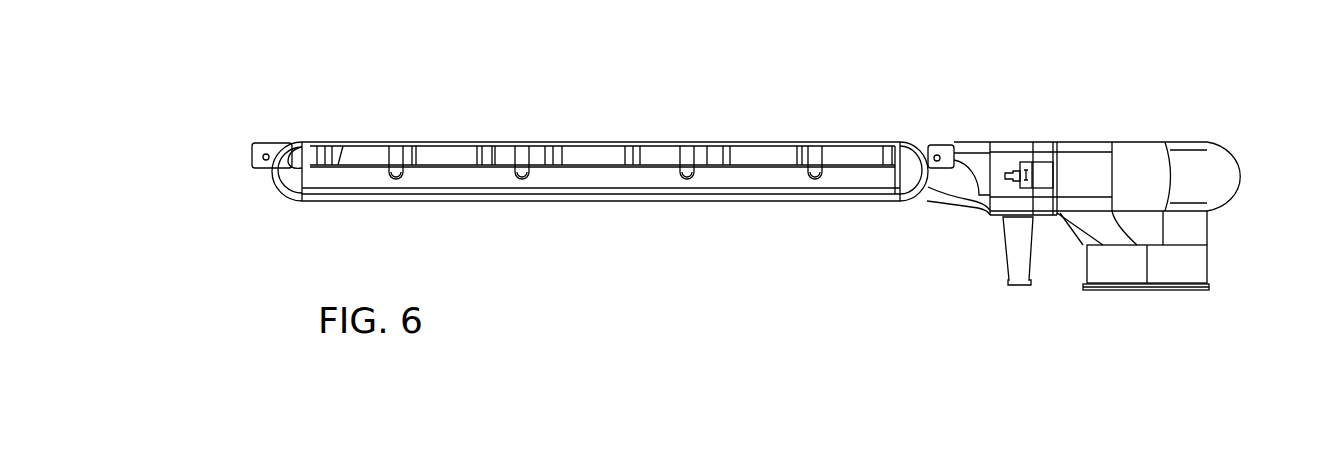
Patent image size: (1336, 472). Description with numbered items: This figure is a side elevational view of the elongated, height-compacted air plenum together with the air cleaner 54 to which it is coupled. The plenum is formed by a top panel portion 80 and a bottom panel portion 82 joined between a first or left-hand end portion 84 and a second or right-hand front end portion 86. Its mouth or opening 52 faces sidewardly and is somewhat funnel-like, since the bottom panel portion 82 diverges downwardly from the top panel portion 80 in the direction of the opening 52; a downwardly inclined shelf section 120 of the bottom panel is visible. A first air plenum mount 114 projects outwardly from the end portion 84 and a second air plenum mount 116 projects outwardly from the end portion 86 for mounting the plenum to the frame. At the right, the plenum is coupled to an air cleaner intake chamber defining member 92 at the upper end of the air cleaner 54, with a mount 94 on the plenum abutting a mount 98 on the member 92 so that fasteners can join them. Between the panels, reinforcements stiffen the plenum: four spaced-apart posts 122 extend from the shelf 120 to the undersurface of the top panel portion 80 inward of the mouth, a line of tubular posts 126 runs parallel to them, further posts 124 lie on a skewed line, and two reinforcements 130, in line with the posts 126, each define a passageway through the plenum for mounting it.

The opening 52 is at (655, 152).
The air cleaner 54 is at (1198, 267).
The top panel portion 80 is at (668, 142).
The bottom panel portion 82 is at (680, 203).
The first end portion 84 is at (273, 173).
The second end portion 86 is at (925, 188).
The air cleaner intake chamber defining member 92 is at (1205, 142).
The first mount 94 is at (1016, 163).
The mount 98 is at (1043, 170).
The first air plenum mount 114 is at (266, 143).
The second air plenum mount 116 is at (936, 143).
The shelf section 120 is at (582, 178).
The posts 122 is at (517, 171).
The posts 124 is at (625, 158).
The tubular posts 126 is at (477, 153).
The reinforcements 130 is at (333, 152).